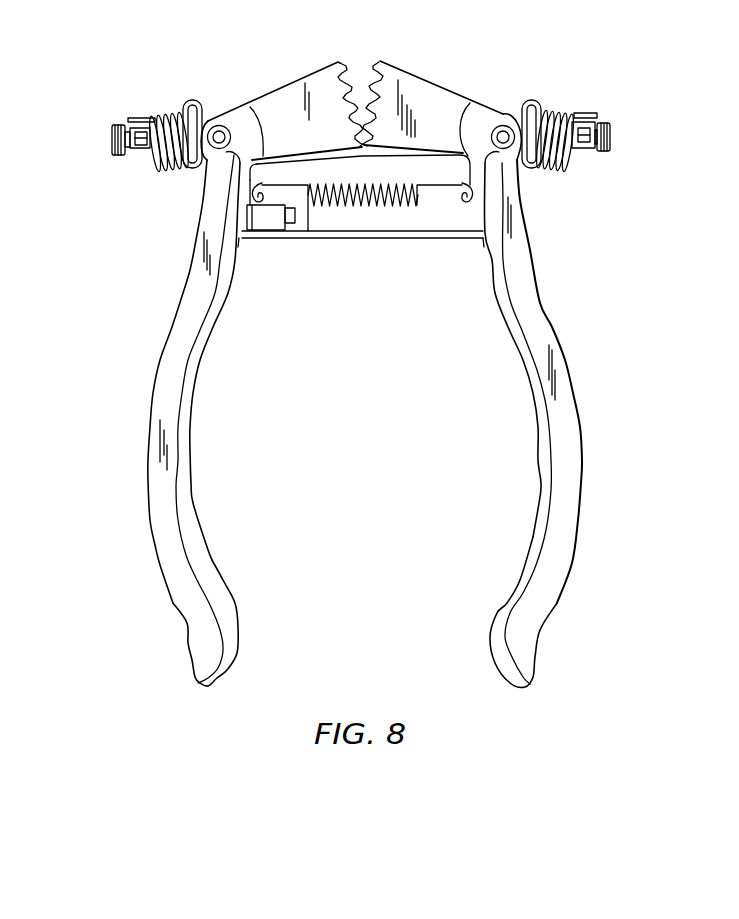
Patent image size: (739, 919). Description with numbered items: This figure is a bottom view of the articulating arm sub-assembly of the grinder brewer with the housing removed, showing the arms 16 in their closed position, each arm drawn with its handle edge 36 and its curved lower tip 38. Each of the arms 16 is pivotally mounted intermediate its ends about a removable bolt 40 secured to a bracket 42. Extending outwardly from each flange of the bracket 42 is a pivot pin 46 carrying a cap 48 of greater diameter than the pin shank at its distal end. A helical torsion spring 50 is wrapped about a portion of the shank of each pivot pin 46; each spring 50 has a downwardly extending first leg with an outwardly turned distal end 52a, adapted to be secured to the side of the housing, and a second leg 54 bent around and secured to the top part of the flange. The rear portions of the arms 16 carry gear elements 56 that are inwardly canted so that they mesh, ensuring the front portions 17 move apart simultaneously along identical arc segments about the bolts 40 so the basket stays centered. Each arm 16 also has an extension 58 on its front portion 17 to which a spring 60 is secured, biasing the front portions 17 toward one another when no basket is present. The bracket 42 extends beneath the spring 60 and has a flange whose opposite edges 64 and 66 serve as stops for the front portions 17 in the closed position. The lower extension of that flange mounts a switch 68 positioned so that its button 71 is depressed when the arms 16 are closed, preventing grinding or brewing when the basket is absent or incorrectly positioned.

The arms 16 is at (584, 477).
The front portions 17 is at (149, 445).
The handle edge 36 is at (192, 485).
The handle tip 38 is at (221, 690).
The removable bolts 40 is at (503, 125).
The bracket 42 is at (516, 112).
The pivot pin 46 is at (142, 158).
The cap 48 is at (112, 140).
The helical torsion spring 50 is at (174, 114).
The outwardly turned distal ends 52a is at (134, 117).
The second leg 54 is at (203, 98).
The gear element 56 is at (362, 64).
The extension 58 is at (255, 182).
The spring 60 is at (375, 190).
The edge 64 is at (238, 245).
The edge 66 is at (484, 245).
The switch 68 is at (272, 225).
The button 71 is at (245, 217).